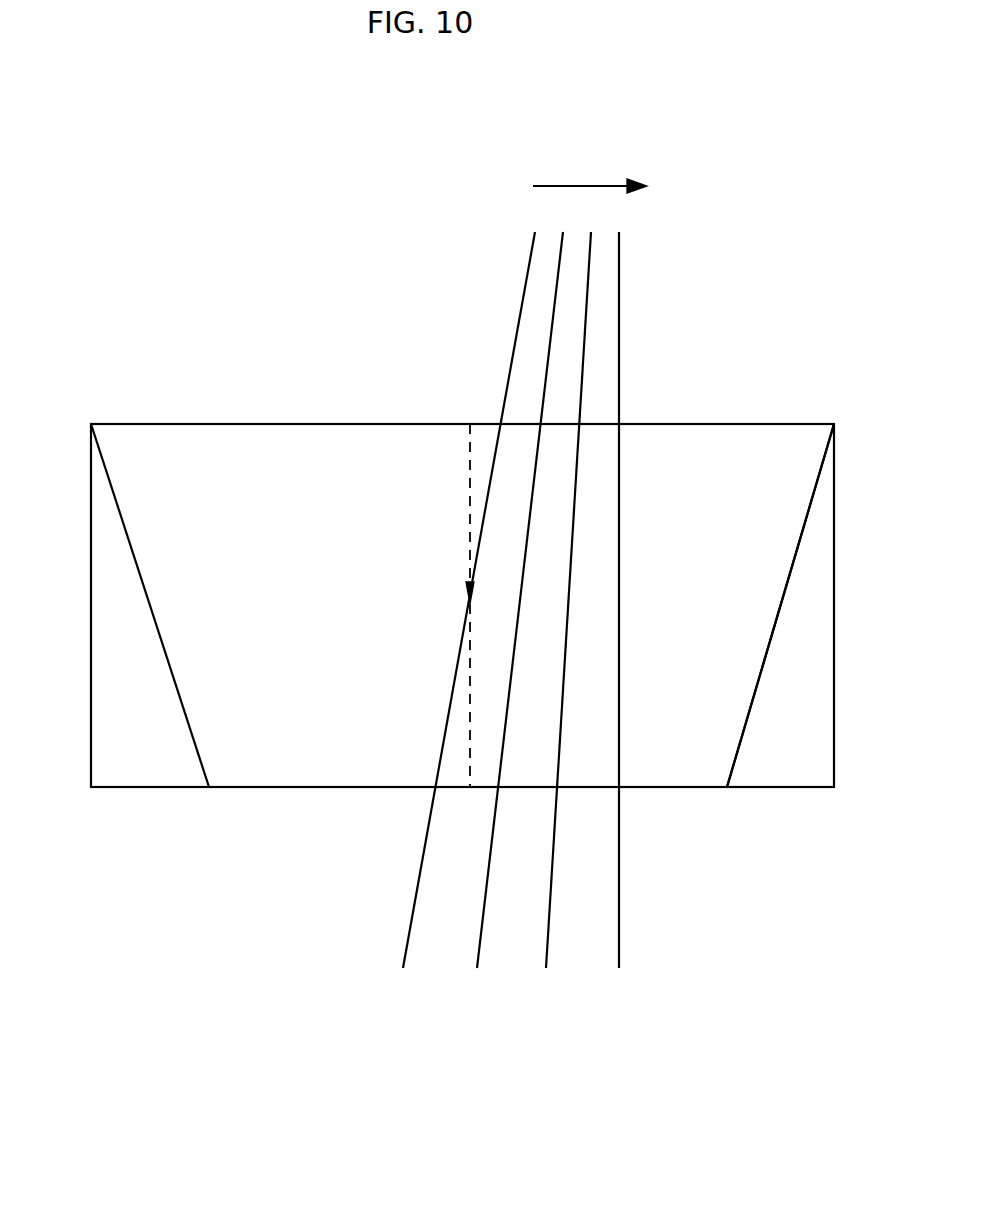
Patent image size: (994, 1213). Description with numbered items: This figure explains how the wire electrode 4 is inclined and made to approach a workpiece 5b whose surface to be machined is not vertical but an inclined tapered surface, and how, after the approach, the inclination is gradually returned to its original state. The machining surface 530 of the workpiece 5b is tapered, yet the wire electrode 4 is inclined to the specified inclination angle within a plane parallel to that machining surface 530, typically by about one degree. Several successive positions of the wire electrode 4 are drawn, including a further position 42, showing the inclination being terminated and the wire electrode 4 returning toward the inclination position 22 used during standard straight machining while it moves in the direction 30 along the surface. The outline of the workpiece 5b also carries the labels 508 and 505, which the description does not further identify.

The workpiece 5b is at (228, 415).
The left prism face 508 is at (91, 424).
The right prism face 505 is at (834, 424).
The machining surface 530 is at (731, 473).
The inclination position of the wire electrode 22 is at (469, 424).
The wire electrode 4 is at (505, 646).
The light beam component 42 is at (523, 302).
The moving direction 30 is at (562, 186).